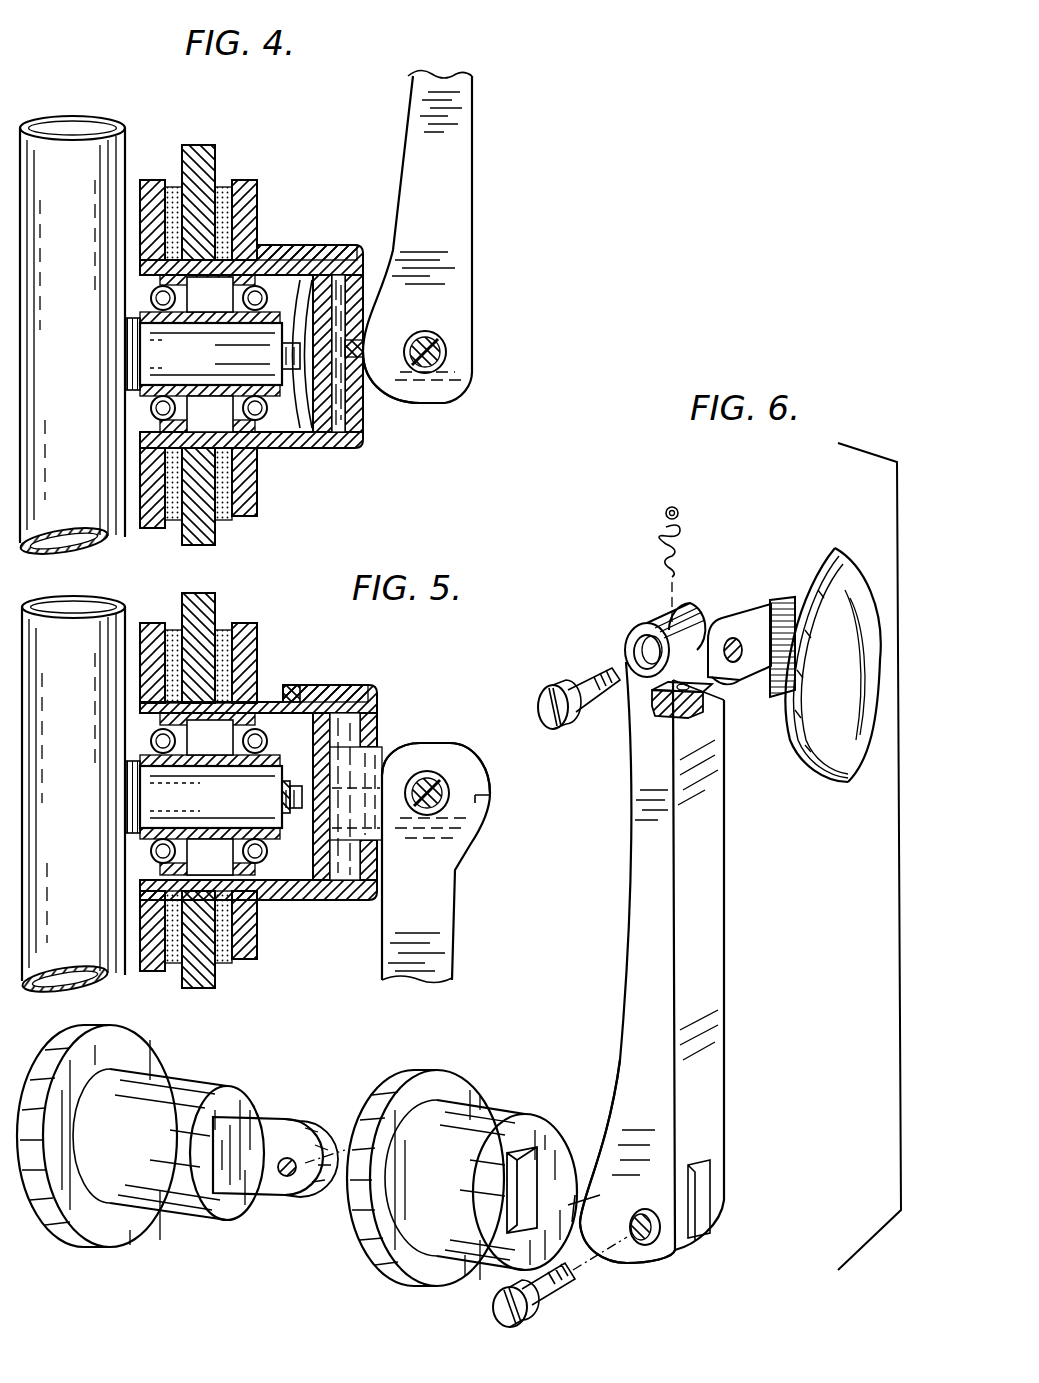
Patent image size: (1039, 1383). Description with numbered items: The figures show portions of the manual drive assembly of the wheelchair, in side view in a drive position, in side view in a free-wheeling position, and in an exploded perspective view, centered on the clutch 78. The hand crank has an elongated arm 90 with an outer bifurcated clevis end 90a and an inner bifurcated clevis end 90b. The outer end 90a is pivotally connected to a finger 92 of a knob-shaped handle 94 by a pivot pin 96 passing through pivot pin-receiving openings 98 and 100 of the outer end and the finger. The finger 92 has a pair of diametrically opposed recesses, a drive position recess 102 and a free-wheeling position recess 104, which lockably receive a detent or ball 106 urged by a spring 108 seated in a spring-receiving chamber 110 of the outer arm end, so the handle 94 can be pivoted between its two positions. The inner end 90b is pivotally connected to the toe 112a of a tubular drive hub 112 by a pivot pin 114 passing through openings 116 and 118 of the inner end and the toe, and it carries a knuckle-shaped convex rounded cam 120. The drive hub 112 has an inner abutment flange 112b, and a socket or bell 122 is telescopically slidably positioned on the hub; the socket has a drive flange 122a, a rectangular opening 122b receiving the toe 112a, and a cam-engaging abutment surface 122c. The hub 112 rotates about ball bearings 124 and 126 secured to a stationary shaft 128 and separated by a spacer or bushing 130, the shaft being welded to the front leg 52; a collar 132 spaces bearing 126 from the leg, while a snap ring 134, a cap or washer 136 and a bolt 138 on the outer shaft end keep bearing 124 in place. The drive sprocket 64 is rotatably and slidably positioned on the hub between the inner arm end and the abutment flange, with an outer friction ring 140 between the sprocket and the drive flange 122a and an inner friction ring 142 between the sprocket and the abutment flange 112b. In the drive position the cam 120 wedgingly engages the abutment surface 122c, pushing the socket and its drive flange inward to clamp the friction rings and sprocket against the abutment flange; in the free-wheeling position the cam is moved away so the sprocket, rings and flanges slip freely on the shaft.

In FIG. 4, the front leg 52 is at (66, 130).
In FIG. 5, the front leg 52 is at (73, 785).
In FIG. 4, the drive sprocket 64 is at (202, 145).
In FIG. 5, the drive sprocket 64 is at (214, 774).
In FIG. 4, the clutch 78 is at (302, 146).
In FIG. 5, the clutch 78 is at (250, 824).
In FIG. 4, the elongated arm 90 is at (474, 176).
In FIG. 5, the elongated arm 90 is at (442, 863).
In FIG. 6, the elongated arm 90 is at (640, 885).
In FIG. 6, the outer bifurcated clevis end 90a is at (645, 622).
In FIG. 4, the inner bifurcated clevis end 90b is at (440, 402).
In FIG. 5, the inner bifurcated clevis end 90b is at (438, 747).
In FIG. 6, the inner bifurcated clevis end 90b is at (663, 1258).
In FIG. 6, the finger 92 is at (771, 612).
In FIG. 6, the knob-shaped handle 94 is at (830, 750).
In FIG. 6, the pivot pin 96 is at (597, 683).
In FIG. 6, the pivot pin-receiving opening 98 is at (640, 655).
In FIG. 6, the pivot pin-receiving opening 100 is at (743, 662).
In FIG. 6, the drive position recess 102 is at (730, 682).
In FIG. 6, the free-wheeling position recess 104 is at (737, 620).
In FIG. 6, the detent or ball 106 is at (674, 506).
In FIG. 6, the spring 108 is at (662, 546).
In FIG. 6, the spring-receiving chamber 110 is at (693, 712).
In FIG. 4, the tubular drive hub 112 is at (338, 448).
In FIG. 5, the tubular drive hub 112 is at (329, 864).
In FIG. 6, the tubular drive hub 112 is at (183, 1080).
In FIG. 4, the toe 112a is at (380, 400).
In FIG. 5, the toe 112a is at (397, 796).
In FIG. 6, the toe 112a is at (273, 1127).
In FIG. 4, the abutment flange 112b is at (153, 528).
In FIG. 5, the abutment flange 112b is at (133, 950).
In FIG. 6, the abutment flange 112b is at (63, 1230).
In FIG. 4, the pivot pin 114 is at (440, 353).
In FIG. 5, the pivot pin 114 is at (474, 785).
In FIG. 6, the pivot pin 114 is at (540, 1283).
In FIG. 6, the pivot-pin receiving opening 116 is at (643, 1247).
In FIG. 6, the pivot-pin receiving opening 118 is at (287, 1178).
In FIG. 4, the cam 120 is at (365, 360).
In FIG. 5, the cam 120 is at (478, 816).
In FIG. 6, the cam 120 is at (572, 1218).
In FIG. 4, the socket or bell 122 is at (366, 452).
In FIG. 5, the socket or bell 122 is at (276, 768).
In FIG. 6, the socket or bell 122 is at (427, 1273).
In FIG. 4, the drive flange 122a is at (257, 182).
In FIG. 5, the drive flange 122a is at (320, 661).
In FIG. 6, the drive flange 122a is at (442, 1075).
In FIG. 4, the rectangular opening 122b is at (342, 280).
In FIG. 5, the rectangular opening 122b is at (388, 776).
In FIG. 6, the rectangular opening 122b is at (560, 1118).
In FIG. 4, the cam-engaging abutment surface 122c is at (360, 428).
In FIG. 5, the cam-engaging abutment surface 122c is at (407, 824).
In FIG. 6, the cam-engaging abutment surface 122c is at (497, 1270).
In FIG. 4, the ball bearing 124 is at (262, 418).
In FIG. 5, the ball bearing 124 is at (236, 897).
In FIG. 4, the ball bearing 126 is at (150, 410).
In FIG. 5, the ball bearing 126 is at (117, 853).
In FIG. 4, the stationary shaft 128 is at (196, 364).
In FIG. 5, the stationary shaft 128 is at (211, 797).
In FIG. 4, the spacer or bushing 130 is at (210, 299).
In FIG. 5, the spacer or bushing 130 is at (210, 739).
In FIG. 4, the collar 132 is at (126, 322).
In FIG. 5, the collar 132 is at (98, 781).
In FIG. 5, the snap ring 134 is at (308, 677).
In FIG. 5, the cap or washer 136 is at (261, 804).
In FIG. 4, the bolt 138 is at (299, 278).
In FIG. 5, the bolt 138 is at (255, 791).
In FIG. 4, the outer friction ring 140 is at (240, 182).
In FIG. 5, the outer friction ring 140 is at (267, 769).
In FIG. 4, the inner friction ring 142 is at (173, 186).
In FIG. 5, the inner friction ring 142 is at (158, 640).